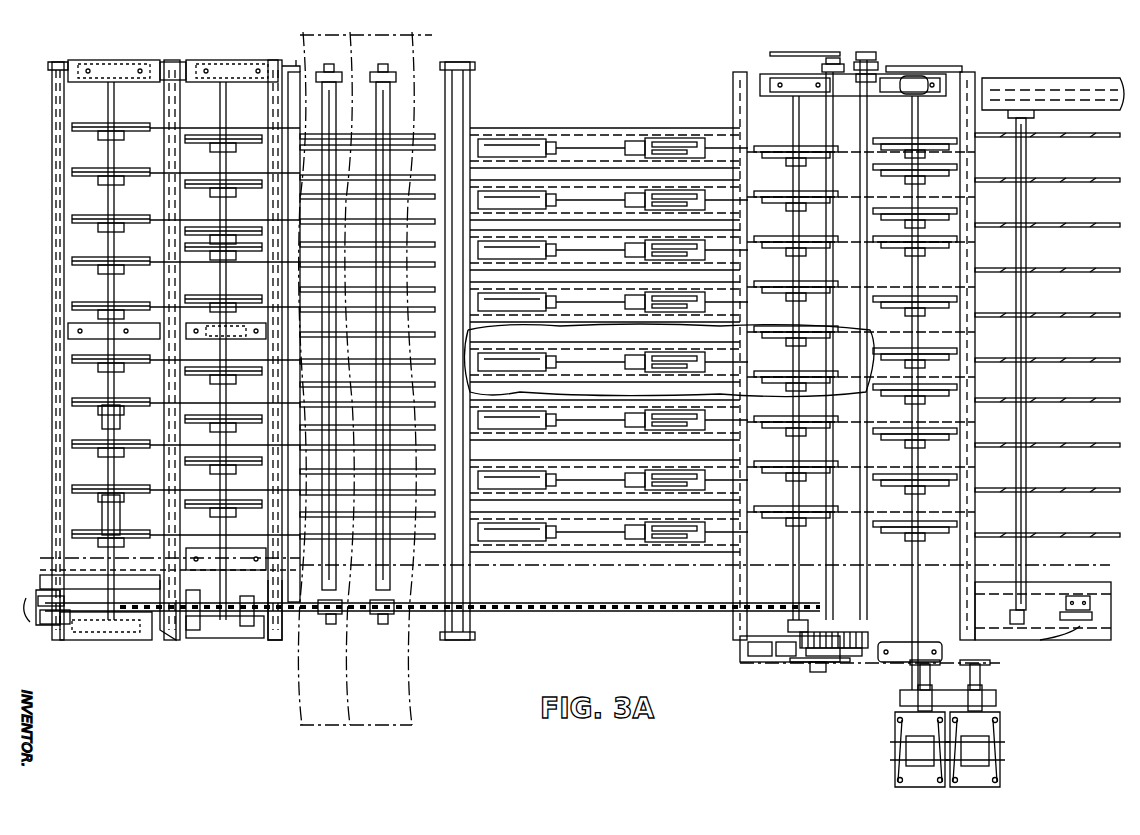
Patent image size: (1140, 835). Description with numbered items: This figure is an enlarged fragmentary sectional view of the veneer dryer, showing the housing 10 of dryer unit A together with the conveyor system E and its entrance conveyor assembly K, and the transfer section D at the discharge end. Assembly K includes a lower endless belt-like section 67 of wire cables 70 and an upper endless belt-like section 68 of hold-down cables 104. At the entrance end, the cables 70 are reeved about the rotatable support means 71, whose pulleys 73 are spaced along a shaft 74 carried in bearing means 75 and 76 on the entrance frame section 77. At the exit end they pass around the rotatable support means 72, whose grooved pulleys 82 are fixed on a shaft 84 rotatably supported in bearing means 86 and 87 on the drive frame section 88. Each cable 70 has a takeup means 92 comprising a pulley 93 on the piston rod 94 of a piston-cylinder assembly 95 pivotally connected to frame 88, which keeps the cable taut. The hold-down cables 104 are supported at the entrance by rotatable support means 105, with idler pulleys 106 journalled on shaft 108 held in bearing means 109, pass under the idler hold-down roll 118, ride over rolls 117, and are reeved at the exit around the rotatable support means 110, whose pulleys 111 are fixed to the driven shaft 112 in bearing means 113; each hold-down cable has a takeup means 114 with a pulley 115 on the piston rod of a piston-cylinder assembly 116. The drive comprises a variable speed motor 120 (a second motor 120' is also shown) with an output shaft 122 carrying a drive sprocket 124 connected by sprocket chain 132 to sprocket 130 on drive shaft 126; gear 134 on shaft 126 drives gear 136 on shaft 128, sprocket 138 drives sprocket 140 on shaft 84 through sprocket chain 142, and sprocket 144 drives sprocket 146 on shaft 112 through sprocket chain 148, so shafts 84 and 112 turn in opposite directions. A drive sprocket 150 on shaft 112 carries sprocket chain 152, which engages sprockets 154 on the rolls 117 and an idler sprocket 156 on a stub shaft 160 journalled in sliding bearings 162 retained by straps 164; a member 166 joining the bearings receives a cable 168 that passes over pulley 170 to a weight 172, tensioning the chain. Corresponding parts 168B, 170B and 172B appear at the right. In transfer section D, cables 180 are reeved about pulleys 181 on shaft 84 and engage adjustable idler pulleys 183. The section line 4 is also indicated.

The housing 10 is at (416, 684).
The lower endless belt-like section 67 is at (146, 120).
The upper endless belt-like section 68 is at (238, 300).
The wire cables 70 is at (152, 175).
The rotatable support means 71 is at (96, 120).
The rotatable support means 72 is at (940, 478).
The pulleys 73 is at (119, 515).
The shaft 74 is at (112, 430).
The bearing means 75 is at (104, 640).
The bearing means 76 is at (104, 66).
The entrance frame section 77 is at (58, 66).
The pulleys 82 is at (950, 158).
The shaft 84 is at (925, 393).
The bearing means 86 is at (912, 646).
The bearing means 87 is at (916, 94).
The drive frame section 88 is at (733, 82).
The takeup means 92 is at (606, 380).
The pulley 93 is at (665, 362).
The piston rod 94 is at (598, 140).
The piston-cylinder assembly 95 is at (524, 360).
The cables 104 is at (416, 178).
The rotatable support means 105 is at (236, 128).
The idler pulleys 106 is at (222, 331).
The shaft 108 is at (220, 120).
The bearing means 109 is at (226, 66).
The rotatable support means 110 is at (784, 114).
The pulleys 111 is at (830, 142).
The driven shaft 112 is at (790, 584).
The bearing means 113 is at (790, 80).
The takeup means 114 is at (580, 132).
The pulleys 115 is at (690, 140).
The piston-cylinder assemblies 116 is at (490, 138).
The rolls 117 is at (342, 74).
The idler hold-down roll 118 is at (300, 72).
The variable speed motor 120 is at (993, 749).
The motor 120' is at (896, 749).
The output shaft 122 is at (990, 702).
The drive sprocket 124 is at (916, 662).
The drive shaft 126 is at (836, 110).
The shaft 128 is at (868, 144).
The sprocket 130 is at (812, 668).
The sprocket chain 132 is at (872, 666).
The gear 134 is at (846, 628).
The gear 136 is at (856, 632).
The sprocket 138 is at (826, 66).
The sprocket 140 is at (940, 66).
The sprocket chain 142 is at (880, 74).
The sprocket 144 is at (880, 56).
The sprocket 146 is at (786, 52).
The sprocket chain 148 is at (870, 42).
The drive sprocket 150 is at (730, 610).
The sprocket chain 152 is at (510, 612).
The sprockets 154 is at (338, 614).
The idler sprocket 156 is at (270, 642).
The stub shaft 160 is at (190, 636).
The bearings 162 is at (214, 640).
The straps 164 is at (246, 636).
The member 166 is at (166, 636).
The cable 168 is at (84, 630).
The bracket 168B is at (1062, 612).
The pulley 170 is at (60, 630).
The roller 170B is at (1088, 596).
The weight 172 is at (36, 620).
The guide 172B is at (1080, 640).
The cables 180 is at (1104, 180).
The pulleys 181 is at (950, 138).
The idler pulleys 183 is at (1028, 198).
The section line 4 is at (38, 498).
The dryer unit A is at (360, 743).
The transfer section D is at (990, 78).
The conveyor system E is at (44, 200).
The entrance conveyor assembly K is at (40, 382).